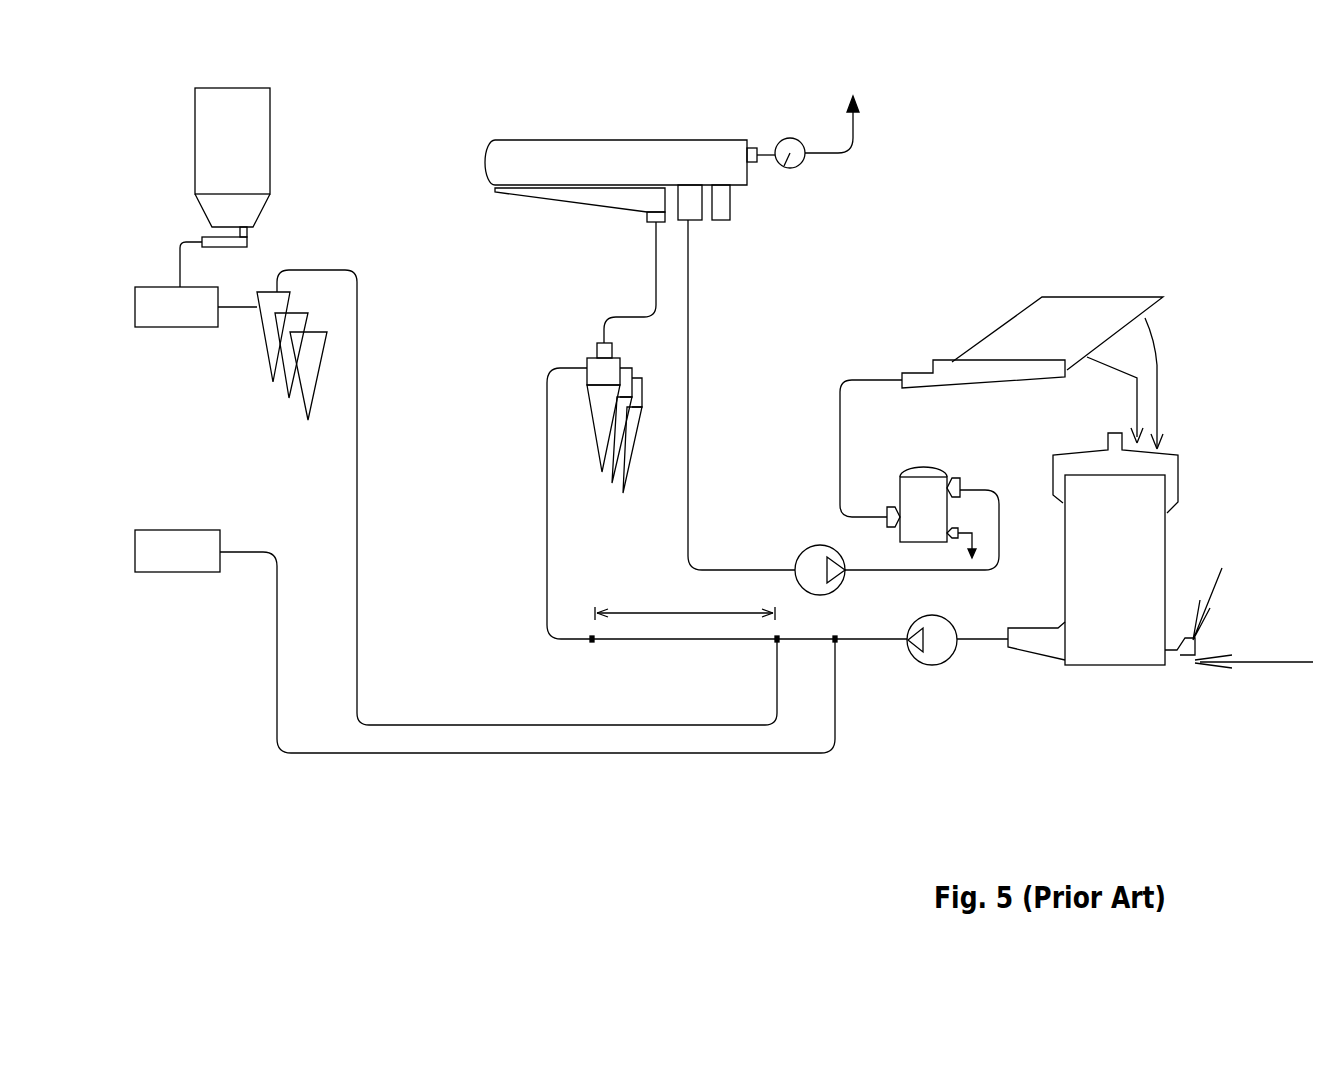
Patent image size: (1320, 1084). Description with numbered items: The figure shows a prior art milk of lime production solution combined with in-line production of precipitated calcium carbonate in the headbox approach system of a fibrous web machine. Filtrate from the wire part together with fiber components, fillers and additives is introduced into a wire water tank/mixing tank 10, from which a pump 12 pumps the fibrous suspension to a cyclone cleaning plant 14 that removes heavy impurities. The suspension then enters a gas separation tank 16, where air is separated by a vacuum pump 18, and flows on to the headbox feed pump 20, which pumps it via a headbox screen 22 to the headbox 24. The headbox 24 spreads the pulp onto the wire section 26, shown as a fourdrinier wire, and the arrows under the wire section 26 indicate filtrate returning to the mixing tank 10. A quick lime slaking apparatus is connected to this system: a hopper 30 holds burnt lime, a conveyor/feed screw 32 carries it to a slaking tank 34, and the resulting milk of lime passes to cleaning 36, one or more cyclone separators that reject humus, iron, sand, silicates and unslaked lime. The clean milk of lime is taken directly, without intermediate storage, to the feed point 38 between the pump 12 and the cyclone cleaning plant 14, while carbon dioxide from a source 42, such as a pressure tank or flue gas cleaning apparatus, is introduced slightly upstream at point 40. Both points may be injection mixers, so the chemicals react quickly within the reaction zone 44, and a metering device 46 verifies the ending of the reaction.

The wire water tank/mixing tank 10 is at (1103, 583).
The pump 12 is at (937, 645).
The cyclone cleaning plant 14 is at (610, 378).
The gas separation tank 16 is at (579, 173).
The vacuum pump 18 is at (792, 163).
The headbox feed pump 20 is at (815, 568).
The headbox screen 22 is at (930, 510).
The headbox 24 is at (977, 370).
The wire section 26 is at (1047, 338).
The hopper 30 is at (213, 161).
The conveyor/feed screw 32 is at (203, 237).
The slaking tank 34 is at (148, 310).
The cleaning 36 is at (273, 305).
The milk of lime feed point 38 is at (776, 650).
The carbon dioxide introduction point 40 is at (834, 650).
The carbon dioxide source 42 is at (156, 564).
The reaction zone 44 is at (685, 596).
The metering device 46 is at (590, 648).